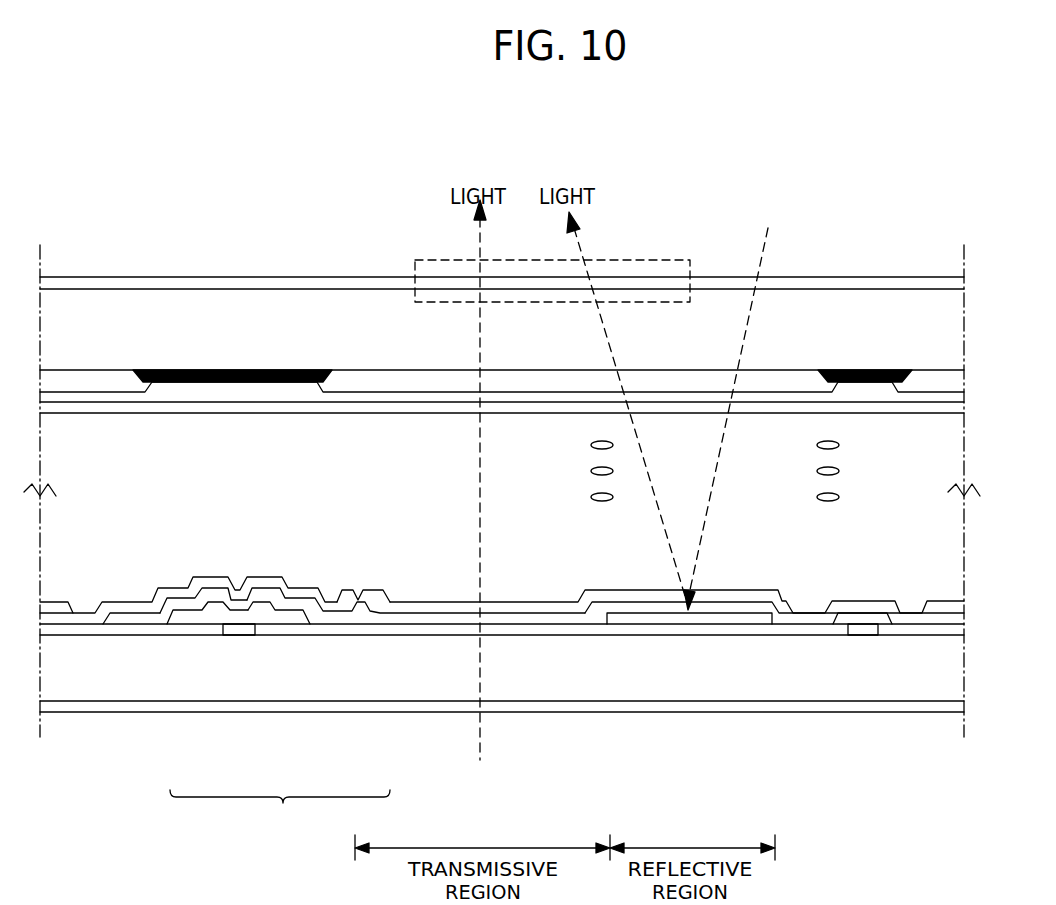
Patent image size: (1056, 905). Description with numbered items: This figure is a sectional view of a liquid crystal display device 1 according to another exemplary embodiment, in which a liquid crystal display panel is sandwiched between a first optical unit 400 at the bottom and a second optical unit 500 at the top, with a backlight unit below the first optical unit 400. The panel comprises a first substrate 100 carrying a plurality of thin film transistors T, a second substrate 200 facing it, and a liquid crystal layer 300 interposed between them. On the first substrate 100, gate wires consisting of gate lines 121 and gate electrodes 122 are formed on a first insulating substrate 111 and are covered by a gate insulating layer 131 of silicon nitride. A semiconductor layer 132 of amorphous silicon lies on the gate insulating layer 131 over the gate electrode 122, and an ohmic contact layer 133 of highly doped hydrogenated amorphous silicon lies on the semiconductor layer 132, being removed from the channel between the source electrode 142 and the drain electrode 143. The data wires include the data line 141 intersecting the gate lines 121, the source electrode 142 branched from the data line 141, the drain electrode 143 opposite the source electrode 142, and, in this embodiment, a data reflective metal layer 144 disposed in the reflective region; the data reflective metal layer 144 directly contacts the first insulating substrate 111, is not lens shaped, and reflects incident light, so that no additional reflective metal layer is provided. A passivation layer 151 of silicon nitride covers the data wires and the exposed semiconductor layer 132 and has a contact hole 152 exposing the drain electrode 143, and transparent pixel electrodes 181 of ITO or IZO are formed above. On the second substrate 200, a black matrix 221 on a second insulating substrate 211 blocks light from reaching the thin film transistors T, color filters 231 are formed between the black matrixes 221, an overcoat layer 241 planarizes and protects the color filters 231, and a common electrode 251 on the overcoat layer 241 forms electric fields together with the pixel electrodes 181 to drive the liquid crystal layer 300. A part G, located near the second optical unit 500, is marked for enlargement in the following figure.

The liquid crystal display device 1 is at (110, 173).
The first substrate 100 is at (978, 613).
The first insulating substrate 111 is at (390, 683).
The gate line 121 is at (865, 630).
The gate electrode 122 is at (241, 628).
The gate insulating layer 131 is at (803, 628).
The semiconductor layer 132 is at (212, 616).
The ohmic contact layer 133 is at (298, 612).
The data line 141 is at (108, 620).
The source electrode 142 is at (197, 605).
The drain electrode 143 is at (329, 617).
The data reflective metal layer 144 is at (663, 615).
The passivation layer 151 is at (57, 618).
The contact hole 152 is at (358, 582).
The pixel electrode 181 is at (578, 608).
The second substrate 200 is at (978, 289).
The second insulating substrate 211 is at (258, 303).
The black matrix 221 is at (181, 370).
The color filter 231 is at (712, 383).
The overcoat layer 241 is at (923, 397).
The common electrode 251 is at (792, 407).
The liquid crystal layer 300 is at (940, 518).
The first optical unit 400 is at (950, 707).
The second optical unit 500 is at (950, 283).
The part G is at (430, 258).
The thin film transistor T is at (280, 811).